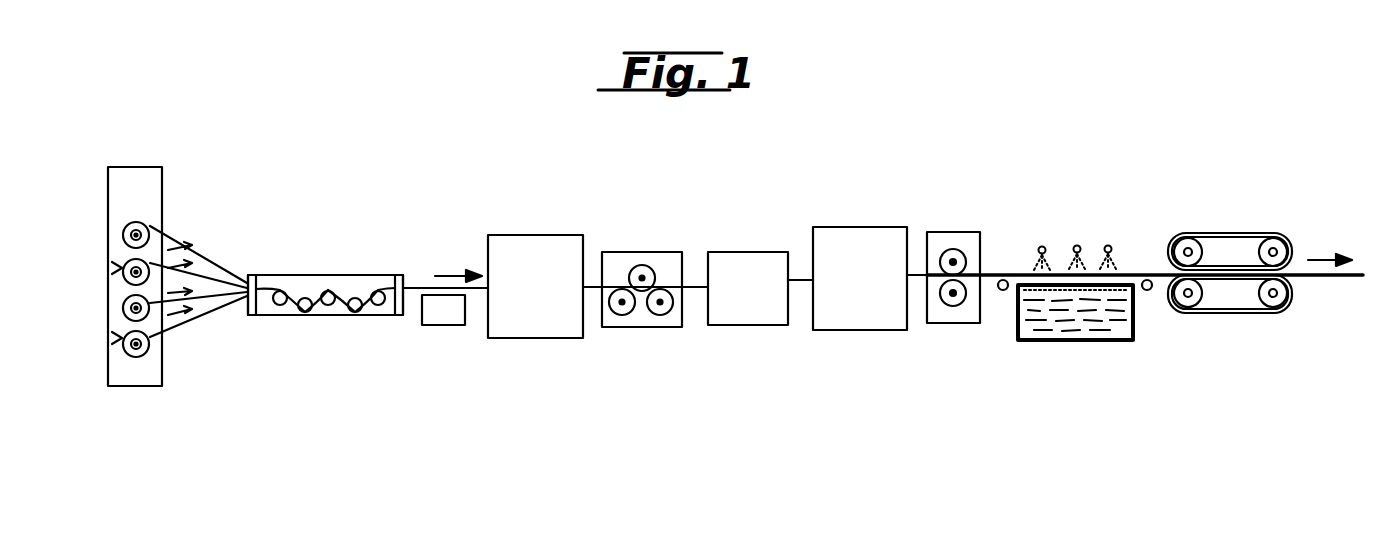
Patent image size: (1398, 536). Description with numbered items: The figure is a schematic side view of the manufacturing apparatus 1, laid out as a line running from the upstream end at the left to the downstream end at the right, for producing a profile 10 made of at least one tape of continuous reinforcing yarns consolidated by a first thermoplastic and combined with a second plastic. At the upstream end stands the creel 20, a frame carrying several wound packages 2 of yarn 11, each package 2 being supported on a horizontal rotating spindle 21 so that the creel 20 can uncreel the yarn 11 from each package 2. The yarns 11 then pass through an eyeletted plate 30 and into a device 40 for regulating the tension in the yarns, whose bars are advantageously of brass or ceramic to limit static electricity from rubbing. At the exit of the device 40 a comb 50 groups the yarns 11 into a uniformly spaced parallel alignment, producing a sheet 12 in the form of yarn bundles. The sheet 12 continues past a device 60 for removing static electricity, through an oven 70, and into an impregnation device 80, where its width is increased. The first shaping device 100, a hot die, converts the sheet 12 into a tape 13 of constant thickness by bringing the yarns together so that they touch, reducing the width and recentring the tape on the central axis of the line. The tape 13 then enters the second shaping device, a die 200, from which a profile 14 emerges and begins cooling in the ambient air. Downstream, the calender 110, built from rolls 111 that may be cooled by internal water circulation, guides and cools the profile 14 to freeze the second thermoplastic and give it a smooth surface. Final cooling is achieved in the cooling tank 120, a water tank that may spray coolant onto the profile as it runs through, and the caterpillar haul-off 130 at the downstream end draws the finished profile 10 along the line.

The manufacturing apparatus 1 is at (393, 127).
The wound package 2 is at (126, 233).
The profile 10 is at (985, 282).
The yarn 11 is at (207, 275).
The sheet 12 is at (298, 283).
The tape 13 is at (801, 278).
The profile 14 is at (913, 273).
The creel 20 is at (127, 168).
The horizontal rotating spindle 21 is at (112, 262).
The eyeletted plate 30 is at (254, 316).
The tension regulating device 40 is at (337, 316).
The comb 50 is at (400, 316).
The static electricity removing device 60 is at (447, 327).
The oven 70 is at (537, 245).
The impregnation device 80 is at (650, 256).
The first shaping device 100 is at (760, 257).
The calender 110 is at (983, 241).
The roll 111 is at (953, 249).
The cooling tank 120 is at (1085, 342).
The caterpillar haul-off 130 is at (1237, 233).
The second shaping device 200 is at (862, 235).